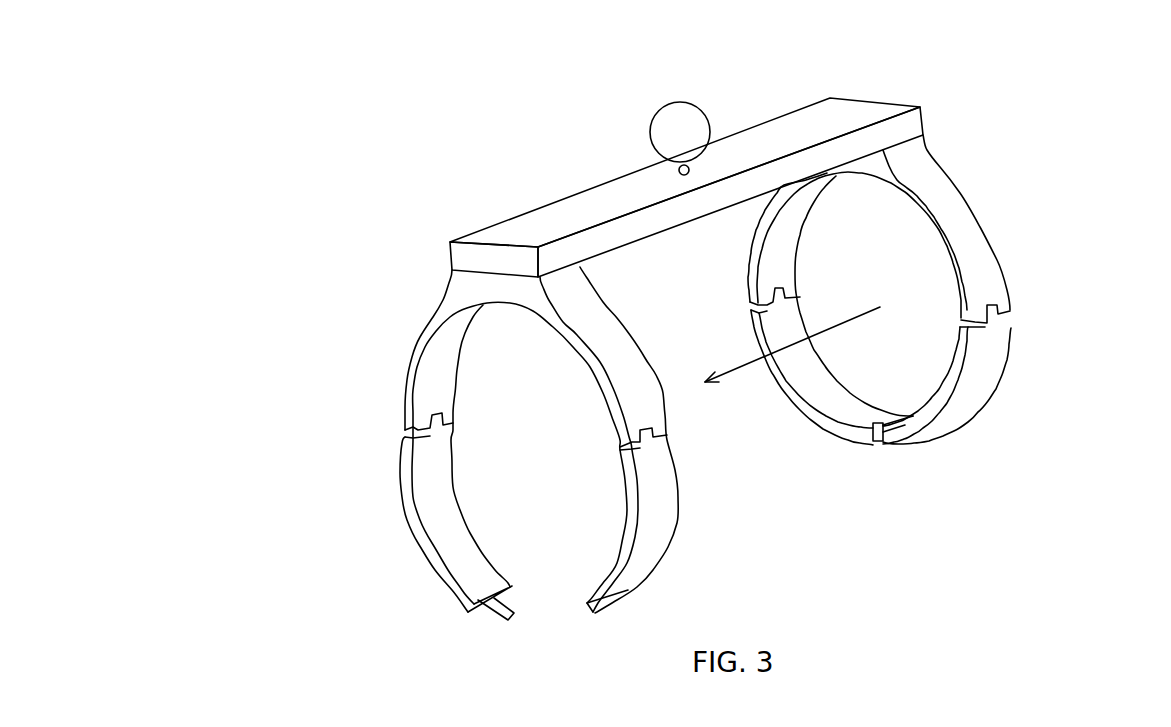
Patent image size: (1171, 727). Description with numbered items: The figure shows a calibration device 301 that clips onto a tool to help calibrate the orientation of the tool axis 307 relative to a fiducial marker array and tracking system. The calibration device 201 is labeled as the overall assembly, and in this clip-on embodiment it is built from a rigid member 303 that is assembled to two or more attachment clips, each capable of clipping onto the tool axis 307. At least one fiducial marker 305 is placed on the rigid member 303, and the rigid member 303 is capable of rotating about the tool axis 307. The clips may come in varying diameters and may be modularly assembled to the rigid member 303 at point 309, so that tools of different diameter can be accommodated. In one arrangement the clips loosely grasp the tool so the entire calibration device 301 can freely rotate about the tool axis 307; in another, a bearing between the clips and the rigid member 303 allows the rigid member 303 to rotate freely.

The calibration device 201 is at (308, 65).
The calibration device 301 is at (405, 443).
The rigid member 303 is at (923, 120).
The fiducial marker 305 is at (650, 122).
The tool axis 307 is at (732, 373).
The point 309 is at (453, 268).